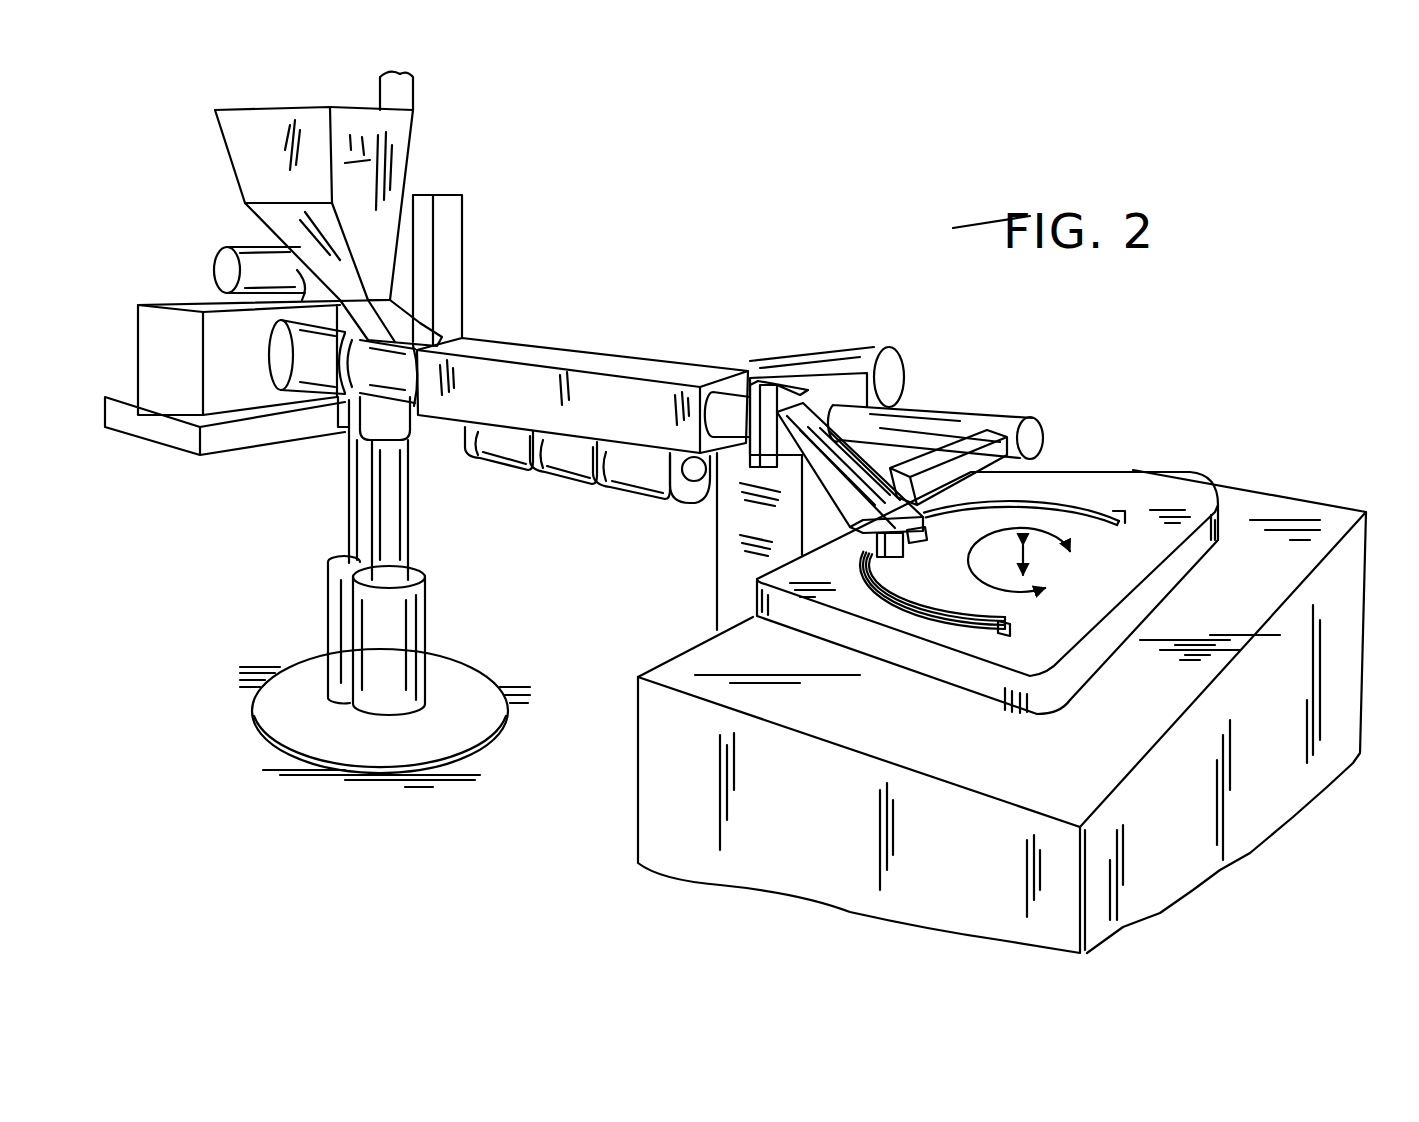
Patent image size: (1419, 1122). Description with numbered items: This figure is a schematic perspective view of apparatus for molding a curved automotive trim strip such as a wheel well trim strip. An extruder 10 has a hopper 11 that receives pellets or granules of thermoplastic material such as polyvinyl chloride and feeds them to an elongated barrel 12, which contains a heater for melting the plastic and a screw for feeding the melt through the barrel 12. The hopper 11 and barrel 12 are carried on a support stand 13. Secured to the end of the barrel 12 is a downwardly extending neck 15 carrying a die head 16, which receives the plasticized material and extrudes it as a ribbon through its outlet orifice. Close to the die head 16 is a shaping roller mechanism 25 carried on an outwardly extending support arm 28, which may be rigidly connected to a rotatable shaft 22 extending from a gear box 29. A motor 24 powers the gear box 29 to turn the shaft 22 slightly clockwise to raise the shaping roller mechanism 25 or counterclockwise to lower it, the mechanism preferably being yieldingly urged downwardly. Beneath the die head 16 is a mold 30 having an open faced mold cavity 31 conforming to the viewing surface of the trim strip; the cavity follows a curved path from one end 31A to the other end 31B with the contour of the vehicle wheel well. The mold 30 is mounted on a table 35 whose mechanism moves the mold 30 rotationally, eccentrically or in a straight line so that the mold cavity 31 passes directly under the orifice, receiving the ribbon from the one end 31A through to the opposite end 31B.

The extruder 10 is at (619, 305).
The hopper 11 is at (373, 165).
The elongated barrel 12 is at (527, 405).
The support stand 13 is at (422, 573).
The downwardly extending neck 15 is at (800, 505).
The die head 16 is at (873, 548).
The rotatable shaft 22 is at (955, 430).
The motor 24 is at (893, 372).
The shaping roller mechanism 25 is at (936, 547).
The support arm 28 is at (995, 472).
The gear box 29 is at (747, 572).
The mold 30 is at (1129, 573).
The mold cavity 31 is at (897, 598).
The one end of mold cavity 31A is at (1117, 510).
The other end of mold cavity 31B is at (1000, 617).
The table 35 is at (1160, 714).